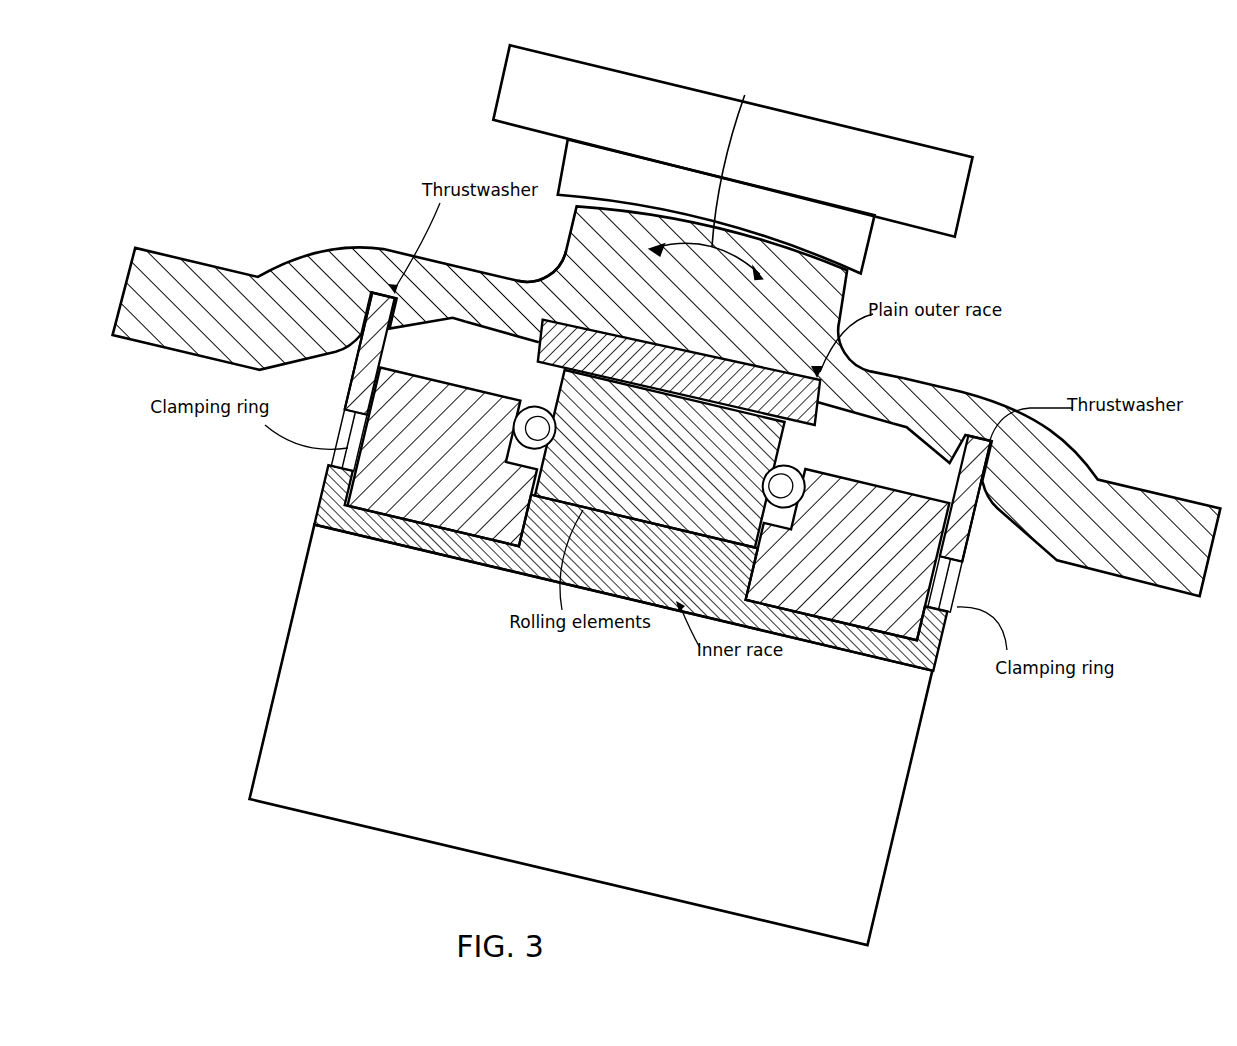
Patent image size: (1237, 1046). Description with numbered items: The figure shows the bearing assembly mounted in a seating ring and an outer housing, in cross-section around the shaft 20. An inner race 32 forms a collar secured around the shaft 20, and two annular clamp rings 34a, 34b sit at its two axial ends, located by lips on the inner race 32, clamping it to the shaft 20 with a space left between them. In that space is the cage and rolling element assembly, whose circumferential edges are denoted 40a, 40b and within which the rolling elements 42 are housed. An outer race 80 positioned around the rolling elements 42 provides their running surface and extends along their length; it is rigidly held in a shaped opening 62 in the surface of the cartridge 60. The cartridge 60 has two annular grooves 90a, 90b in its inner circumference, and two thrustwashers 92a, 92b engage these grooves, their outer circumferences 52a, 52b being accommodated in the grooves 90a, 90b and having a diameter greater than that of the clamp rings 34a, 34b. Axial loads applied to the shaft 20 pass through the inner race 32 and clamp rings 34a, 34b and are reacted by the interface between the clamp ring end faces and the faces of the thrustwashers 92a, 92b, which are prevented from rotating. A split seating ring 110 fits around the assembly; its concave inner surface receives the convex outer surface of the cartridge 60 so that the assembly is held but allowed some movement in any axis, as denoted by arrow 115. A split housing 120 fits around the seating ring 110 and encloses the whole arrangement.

The shaft 20 is at (586, 736).
The inner race 32 is at (327, 493).
The clamp ring 34a is at (437, 456).
The clamp ring 34b is at (843, 559).
The rolling elements 42 is at (643, 456).
The edge of the cage 40a is at (537, 407).
The edge of the cage 40b is at (795, 470).
The outer circumference of thrustwasher 52a is at (381, 290).
The outer circumference of thrustwasher 52b is at (972, 437).
The thrustwasher 92a is at (357, 365).
The thrustwasher 92b is at (958, 548).
The outer race 80 is at (823, 393).
The cartridge 60 is at (849, 293).
The opening in the surface of the cartridge 62 is at (515, 282).
The annular groove 90a is at (322, 252).
The annular groove 90b is at (995, 457).
The seating ring 110 is at (870, 252).
The housing 120 is at (963, 172).
The arrow 115 is at (725, 175).